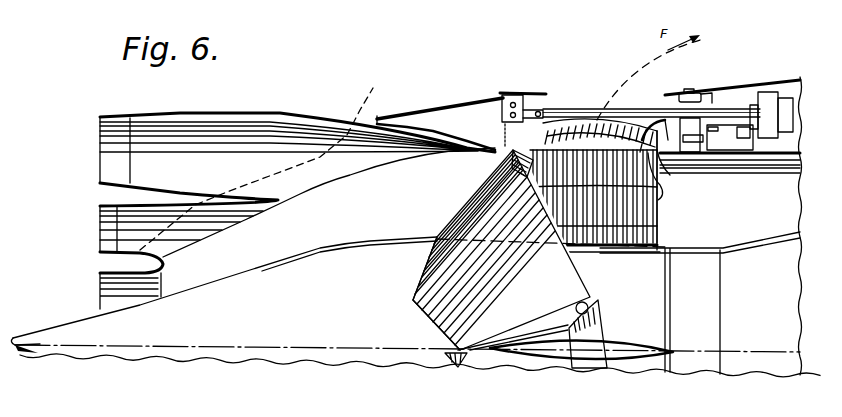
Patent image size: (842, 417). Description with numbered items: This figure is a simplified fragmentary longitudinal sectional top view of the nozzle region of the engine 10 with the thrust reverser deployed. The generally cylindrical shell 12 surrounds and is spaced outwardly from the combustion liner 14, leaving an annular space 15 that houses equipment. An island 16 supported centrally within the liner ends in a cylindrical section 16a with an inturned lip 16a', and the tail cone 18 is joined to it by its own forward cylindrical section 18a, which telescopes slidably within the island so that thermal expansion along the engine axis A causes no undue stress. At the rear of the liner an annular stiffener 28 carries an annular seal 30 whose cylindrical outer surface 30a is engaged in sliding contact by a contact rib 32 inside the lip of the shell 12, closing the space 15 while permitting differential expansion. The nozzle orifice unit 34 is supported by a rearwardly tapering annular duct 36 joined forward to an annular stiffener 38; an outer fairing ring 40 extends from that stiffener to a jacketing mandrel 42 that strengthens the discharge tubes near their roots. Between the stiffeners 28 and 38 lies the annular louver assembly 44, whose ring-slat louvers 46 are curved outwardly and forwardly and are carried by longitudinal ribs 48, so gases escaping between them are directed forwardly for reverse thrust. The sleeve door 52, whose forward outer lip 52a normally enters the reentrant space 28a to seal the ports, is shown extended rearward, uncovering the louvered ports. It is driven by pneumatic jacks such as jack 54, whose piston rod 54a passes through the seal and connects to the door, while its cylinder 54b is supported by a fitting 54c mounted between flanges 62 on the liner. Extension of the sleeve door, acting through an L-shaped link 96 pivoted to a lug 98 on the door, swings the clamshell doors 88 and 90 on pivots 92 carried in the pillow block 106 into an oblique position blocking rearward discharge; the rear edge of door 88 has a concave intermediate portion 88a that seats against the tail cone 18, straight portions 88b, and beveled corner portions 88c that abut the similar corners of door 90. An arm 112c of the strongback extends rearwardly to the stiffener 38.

The engine 10 is at (745, 234).
The cover or shell 12 is at (737, 109).
The combustion liner 14 is at (723, 157).
The annular space 15 is at (760, 95).
The island 16 is at (756, 366).
The cylindrical section 16a is at (693, 387).
The inturned lip 16a' is at (641, 389).
The tail cone or plug 18 is at (196, 351).
The cylindrical section 18a is at (647, 300).
The annular stiffener 28 is at (652, 128).
The reentrant space 28a is at (678, 93).
The annular seal 30 is at (667, 107).
The cylindrical outer surface 30a is at (704, 92).
The contact rib 32 is at (690, 89).
The nozzle orifice unit 34 is at (247, 110).
The annular duct 36 is at (482, 160).
The annular stiffener 38 is at (553, 122).
The outer fairing ring 40 is at (470, 135).
The jacketing mandrel 42 is at (413, 113).
The annular louver assembly 44 is at (571, 128).
The louvers 46 is at (613, 130).
The longitudinal ribs 48 is at (662, 197).
The sleeve door 52 is at (500, 93).
The forward outer lip 52a is at (547, 95).
The pneumatic jack 54 is at (793, 88).
The piston rod 54a is at (727, 109).
The jack cylinder 54b is at (793, 156).
The fitting 54c is at (740, 157).
The flanges 62 is at (770, 142).
The clamshell door or baffle plate 88 is at (418, 306).
The intermediate portion 88a is at (426, 263).
The straight portions 88b is at (440, 322).
The beveled inner rear corner portions 88c is at (480, 348).
The clamshell door or baffle plate 90 is at (467, 366).
The pivots 92 is at (588, 298).
The L-shaped link 96 is at (527, 177).
The lug 98 is at (493, 164).
The pillow block 106 is at (598, 362).
The arm 112c is at (619, 339).
The engine axis A is at (387, 340).